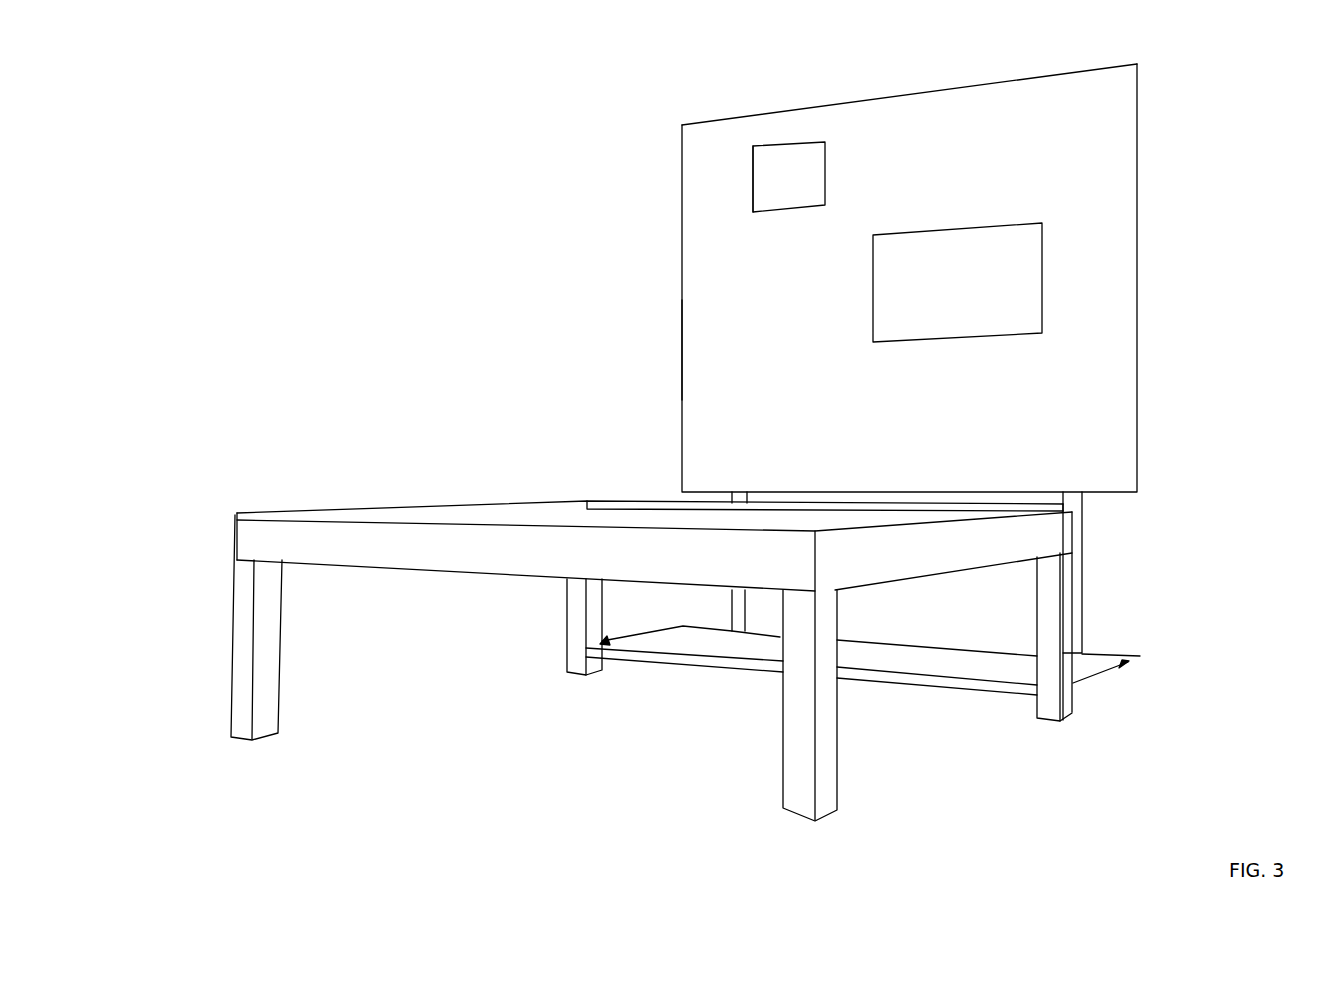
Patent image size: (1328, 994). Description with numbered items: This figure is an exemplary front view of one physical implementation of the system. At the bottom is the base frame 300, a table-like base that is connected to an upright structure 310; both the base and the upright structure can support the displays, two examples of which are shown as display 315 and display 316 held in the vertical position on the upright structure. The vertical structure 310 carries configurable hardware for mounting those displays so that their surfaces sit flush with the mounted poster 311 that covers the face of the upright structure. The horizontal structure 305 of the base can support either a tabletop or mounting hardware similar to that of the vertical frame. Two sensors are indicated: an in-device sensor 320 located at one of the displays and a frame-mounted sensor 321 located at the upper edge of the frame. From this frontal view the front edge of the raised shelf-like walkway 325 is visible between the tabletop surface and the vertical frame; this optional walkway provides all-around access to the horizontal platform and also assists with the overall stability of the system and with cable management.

The base frame 300 is at (1061, 578).
The horizontal structure 305 is at (237, 518).
The upright structure 310 is at (682, 235).
The mounted poster 311 is at (733, 351).
The display 315 is at (827, 172).
The display 316 is at (1042, 263).
The in-device sensor 320 is at (759, 183).
The frame-mounted sensor 321 is at (896, 97).
The raised shelf-like walkway 325 is at (1140, 656).